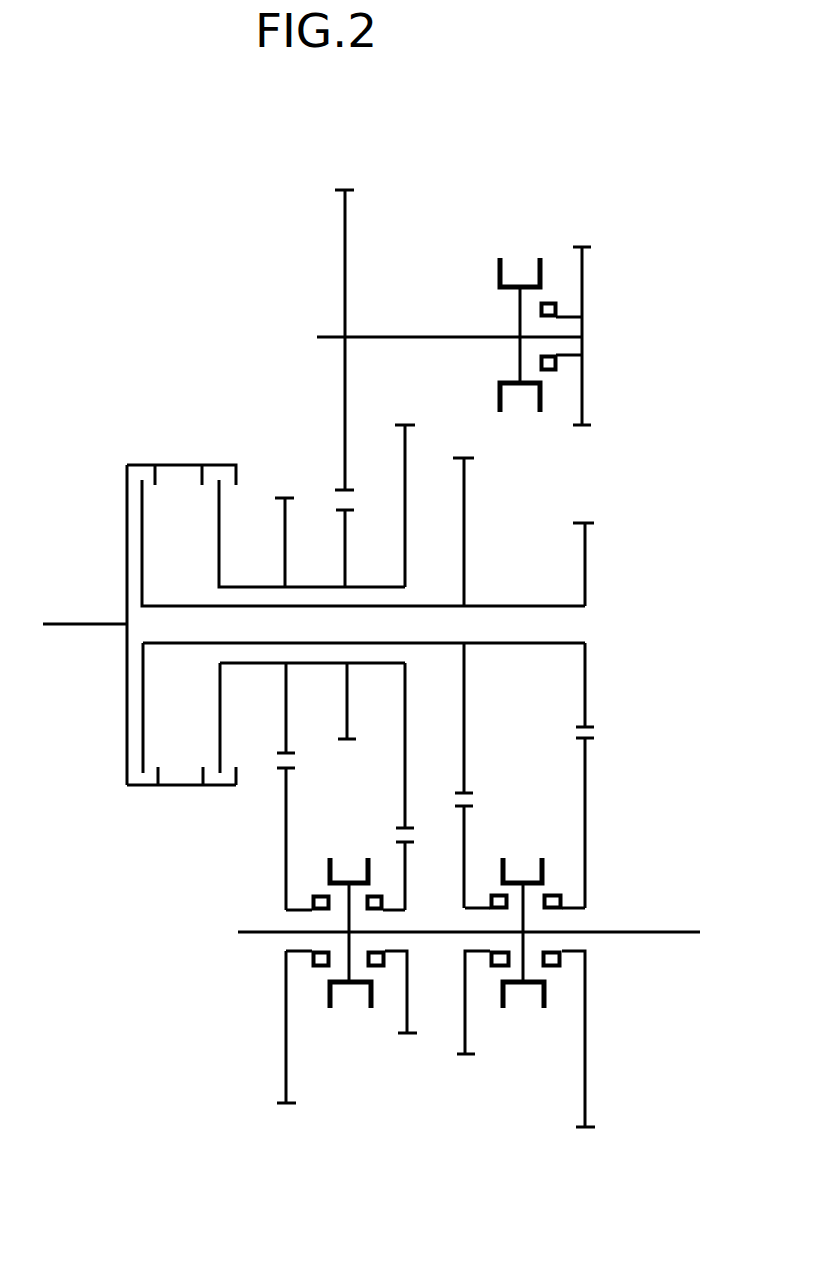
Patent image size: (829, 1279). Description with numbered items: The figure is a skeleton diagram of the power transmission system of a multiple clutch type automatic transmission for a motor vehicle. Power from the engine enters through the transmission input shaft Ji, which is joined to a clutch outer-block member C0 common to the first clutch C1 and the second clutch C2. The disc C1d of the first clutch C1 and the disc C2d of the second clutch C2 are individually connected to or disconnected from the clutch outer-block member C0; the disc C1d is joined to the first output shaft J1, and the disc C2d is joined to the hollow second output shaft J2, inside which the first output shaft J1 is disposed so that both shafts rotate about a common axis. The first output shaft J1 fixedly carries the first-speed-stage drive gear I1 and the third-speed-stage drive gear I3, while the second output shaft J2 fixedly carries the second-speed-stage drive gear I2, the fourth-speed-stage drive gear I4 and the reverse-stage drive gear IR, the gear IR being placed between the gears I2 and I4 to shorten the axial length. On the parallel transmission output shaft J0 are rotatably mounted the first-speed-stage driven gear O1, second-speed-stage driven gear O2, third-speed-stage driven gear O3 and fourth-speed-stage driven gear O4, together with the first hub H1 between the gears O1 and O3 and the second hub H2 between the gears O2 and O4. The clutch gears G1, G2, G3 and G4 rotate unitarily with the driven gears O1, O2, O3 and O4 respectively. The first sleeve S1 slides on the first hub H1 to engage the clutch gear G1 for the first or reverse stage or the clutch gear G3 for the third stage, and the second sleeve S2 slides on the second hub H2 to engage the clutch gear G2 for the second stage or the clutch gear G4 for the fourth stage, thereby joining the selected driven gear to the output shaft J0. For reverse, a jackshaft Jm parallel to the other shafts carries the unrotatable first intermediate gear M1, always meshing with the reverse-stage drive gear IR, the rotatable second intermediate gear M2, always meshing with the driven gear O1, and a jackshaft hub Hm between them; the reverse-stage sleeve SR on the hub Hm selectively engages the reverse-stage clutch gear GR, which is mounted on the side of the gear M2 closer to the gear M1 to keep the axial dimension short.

The first intermediate gear M1 is at (347, 220).
The second intermediate gear M2 is at (582, 273).
The reverse-stage sleeve SR is at (508, 270).
The reverse-stage clutch gear GR is at (550, 302).
The jackshaft hub Hm is at (518, 313).
The jackshaft Jm is at (583, 337).
The reverse-stage drive gear IR is at (343, 532).
The second-speed-stage drive gear I2 is at (285, 533).
The fourth-speed-stage drive gear I4 is at (407, 462).
The third-speed-stage drive gear I3 is at (465, 505).
The first-speed-stage drive gear I1 is at (587, 570).
The second output shaft J2 is at (247, 585).
The first output shaft J1 is at (515, 604).
The transmission input shaft Ji is at (62, 624).
The first clutch C1 is at (120, 795).
The disc of the first clutch C1d is at (143, 707).
The clutch outer-block member C0 is at (167, 788).
The second clutch C2 is at (215, 803).
The disc of the second clutch C2d is at (220, 717).
The second-speed-stage clutch gear G2 is at (318, 895).
The fourth-speed-stage clutch gear G4 is at (375, 897).
The third-speed-stage clutch gear G3 is at (497, 900).
The first-speed-stage clutch gear G1 is at (552, 898).
The transmission output shaft J0 is at (647, 931).
The second hub H2 is at (348, 958).
The first hub H1 is at (523, 968).
The second sleeve S2 is at (357, 990).
The first sleeve S1 is at (532, 995).
The second-speed-stage driven gear O2 is at (288, 1047).
The fourth-speed-stage driven gear O4 is at (408, 1012).
The third-speed-stage driven gear O3 is at (467, 1025).
The first-speed-stage driven gear O1 is at (587, 1053).